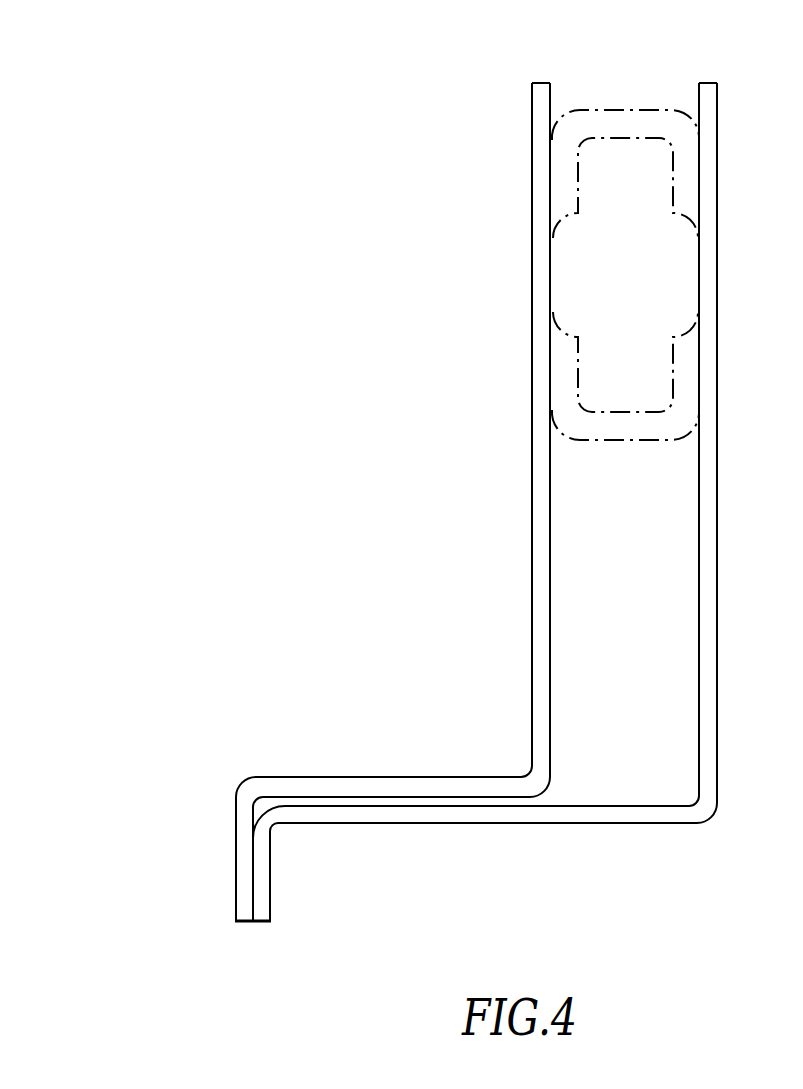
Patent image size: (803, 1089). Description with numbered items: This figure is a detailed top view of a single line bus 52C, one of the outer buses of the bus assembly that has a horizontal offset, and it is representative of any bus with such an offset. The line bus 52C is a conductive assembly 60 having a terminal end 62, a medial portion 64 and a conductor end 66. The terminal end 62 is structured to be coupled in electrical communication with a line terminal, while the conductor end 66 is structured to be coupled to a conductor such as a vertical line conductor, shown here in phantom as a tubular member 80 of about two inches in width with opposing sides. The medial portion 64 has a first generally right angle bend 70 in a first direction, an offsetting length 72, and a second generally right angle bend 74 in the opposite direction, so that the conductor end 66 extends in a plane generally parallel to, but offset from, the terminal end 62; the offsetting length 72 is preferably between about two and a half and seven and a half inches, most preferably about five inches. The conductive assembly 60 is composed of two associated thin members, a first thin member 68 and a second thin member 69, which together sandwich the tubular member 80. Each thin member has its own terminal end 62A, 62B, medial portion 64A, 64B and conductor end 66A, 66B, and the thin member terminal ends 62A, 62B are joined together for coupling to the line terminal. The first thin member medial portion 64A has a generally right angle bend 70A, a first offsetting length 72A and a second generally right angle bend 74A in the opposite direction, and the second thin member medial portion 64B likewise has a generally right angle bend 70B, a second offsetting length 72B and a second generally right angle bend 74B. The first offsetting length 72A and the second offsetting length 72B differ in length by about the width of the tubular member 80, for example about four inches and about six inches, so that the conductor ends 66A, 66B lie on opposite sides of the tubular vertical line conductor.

The line bus 52C is at (388, 135).
The conductive assembly 60 is at (417, 407).
The conductor end 66 is at (513, 197).
The first thin member conductor end 66A is at (541, 87).
The second thin member conductor end 66B is at (710, 90).
The tubular member 80 is at (642, 113).
The second generally right angle bend 74 is at (518, 828).
The second generally right angle bend of first thin member 74A is at (550, 780).
The second generally right angle bend of second thin member 74B is at (713, 797).
The medial portion 64 is at (318, 777).
The first thin member medial portion 64A is at (367, 777).
The second thin member medial portion 64B is at (436, 821).
The offsetting length 72 is at (388, 828).
The first offsetting length 72A is at (422, 778).
The second offsetting length 72B is at (578, 822).
The first generally right angle bend 70 is at (230, 768).
The generally right angle bend of first thin member 70A is at (243, 775).
The generally right angle bend of second thin member 70B is at (282, 815).
The terminal end 62 is at (236, 860).
The first thin member 68 is at (236, 808).
The first thin member terminal end 62A is at (238, 902).
The second thin member terminal end 62B is at (270, 908).
The second thin member 69 is at (265, 850).